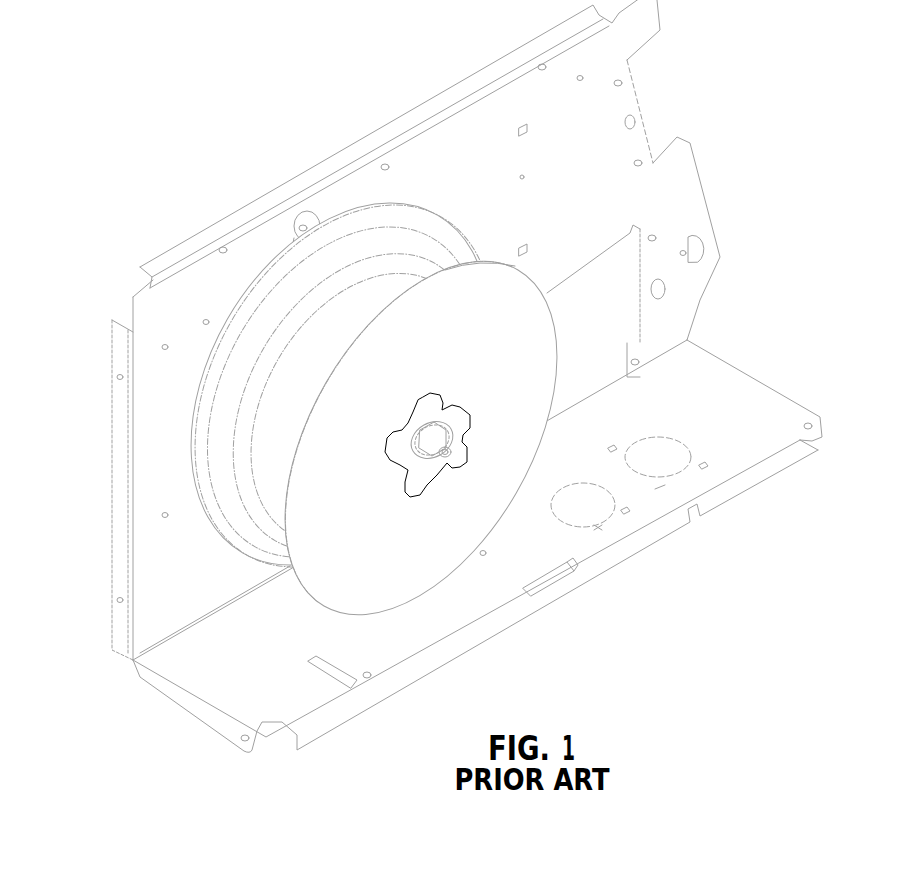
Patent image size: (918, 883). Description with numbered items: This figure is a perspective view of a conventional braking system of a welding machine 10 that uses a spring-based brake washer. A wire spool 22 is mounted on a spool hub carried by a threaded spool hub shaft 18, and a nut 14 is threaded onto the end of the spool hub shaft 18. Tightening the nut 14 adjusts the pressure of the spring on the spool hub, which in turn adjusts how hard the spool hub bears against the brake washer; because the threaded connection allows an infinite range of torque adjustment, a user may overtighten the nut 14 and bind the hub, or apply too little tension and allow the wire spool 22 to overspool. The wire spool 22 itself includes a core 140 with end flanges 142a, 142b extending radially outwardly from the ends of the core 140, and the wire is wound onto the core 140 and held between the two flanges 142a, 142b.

The welding machine 10 is at (239, 89).
The nut 14 is at (440, 437).
The spool hub shaft 18 is at (445, 455).
The wire spool 22 is at (473, 280).
The core 140 is at (268, 467).
The end flange 142a is at (225, 410).
The end flange 142b is at (513, 300).